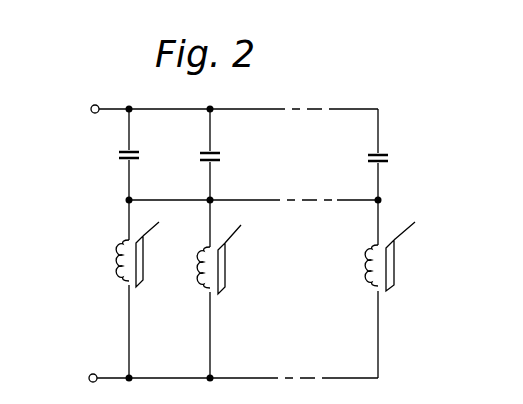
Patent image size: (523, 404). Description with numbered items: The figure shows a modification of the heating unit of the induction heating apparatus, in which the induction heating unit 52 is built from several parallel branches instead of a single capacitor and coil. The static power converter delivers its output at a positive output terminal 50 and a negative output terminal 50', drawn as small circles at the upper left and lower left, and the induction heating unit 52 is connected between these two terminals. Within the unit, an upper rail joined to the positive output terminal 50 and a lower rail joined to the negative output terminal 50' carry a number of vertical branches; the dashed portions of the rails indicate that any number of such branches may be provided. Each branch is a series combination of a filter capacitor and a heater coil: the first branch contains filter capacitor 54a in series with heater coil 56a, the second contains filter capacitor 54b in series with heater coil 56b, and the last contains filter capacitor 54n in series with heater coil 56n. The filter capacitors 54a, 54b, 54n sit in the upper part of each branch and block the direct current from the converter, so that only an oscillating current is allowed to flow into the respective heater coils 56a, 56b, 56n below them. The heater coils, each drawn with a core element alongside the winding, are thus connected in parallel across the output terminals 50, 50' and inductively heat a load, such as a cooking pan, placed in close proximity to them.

The positive output terminal 50 is at (83, 127).
The negative output terminal 50' is at (78, 361).
The induction heating unit 52 is at (283, 312).
The filter capacitor 54a is at (138, 153).
The filter capacitor 54b is at (219, 152).
The filter capacitor 54n is at (371, 153).
The heater coil 56a is at (121, 282).
The heater coil 56b is at (204, 258).
The heater coil 56n is at (373, 283).